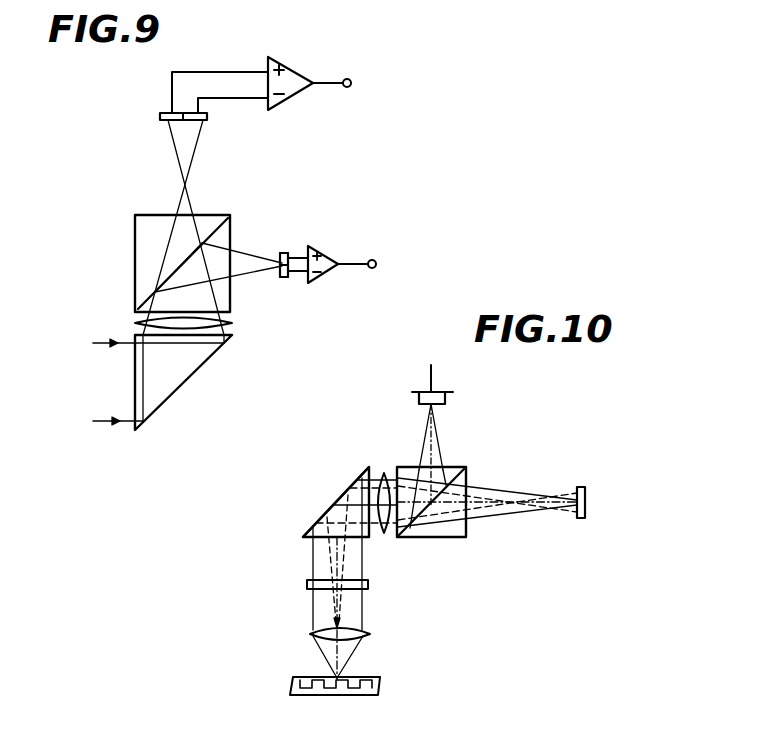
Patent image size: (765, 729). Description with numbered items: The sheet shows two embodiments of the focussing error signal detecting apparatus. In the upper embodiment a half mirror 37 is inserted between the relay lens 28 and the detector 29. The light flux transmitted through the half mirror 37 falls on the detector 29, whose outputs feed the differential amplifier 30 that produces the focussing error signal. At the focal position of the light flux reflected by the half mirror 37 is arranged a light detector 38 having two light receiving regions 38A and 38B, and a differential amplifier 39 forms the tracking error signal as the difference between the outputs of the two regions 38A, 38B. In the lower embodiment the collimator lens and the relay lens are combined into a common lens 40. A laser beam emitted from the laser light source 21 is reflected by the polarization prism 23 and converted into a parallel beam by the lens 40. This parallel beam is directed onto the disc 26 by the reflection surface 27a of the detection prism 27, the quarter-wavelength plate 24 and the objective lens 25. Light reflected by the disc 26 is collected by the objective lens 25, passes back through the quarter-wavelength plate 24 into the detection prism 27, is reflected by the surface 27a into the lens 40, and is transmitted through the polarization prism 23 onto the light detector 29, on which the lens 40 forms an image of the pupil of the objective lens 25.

In FIG. 10, the laser light source 21 is at (447, 397).
In FIG. 10, the polarization prism 23 is at (424, 539).
In FIG. 10, the quarter-wavelength plate 24 is at (307, 582).
In FIG. 10, the objective lens 25 is at (312, 633).
In FIG. 10, the disc 26 is at (312, 678).
In FIG. 9, the detection prism 27 is at (185, 370).
In FIG. 10, the detection prism 27 is at (328, 516).
In FIG. 10, the reflection surface 27a is at (338, 492).
In FIG. 9, the relay lens 28 is at (138, 322).
In FIG. 9, the detector 29 is at (153, 113).
In FIG. 10, the detector 29 is at (586, 490).
In FIG. 9, the differential amplifier 30 is at (270, 60).
In FIG. 9, the half mirror 37 is at (140, 243).
In FIG. 9, the light detector 38 is at (291, 252).
In FIG. 9, the light receiving region 38A is at (286, 253).
In FIG. 9, the light receiving region 38B is at (284, 279).
In FIG. 9, the differential amplifier 39 is at (338, 248).
In FIG. 10, the common lens 40 is at (385, 470).